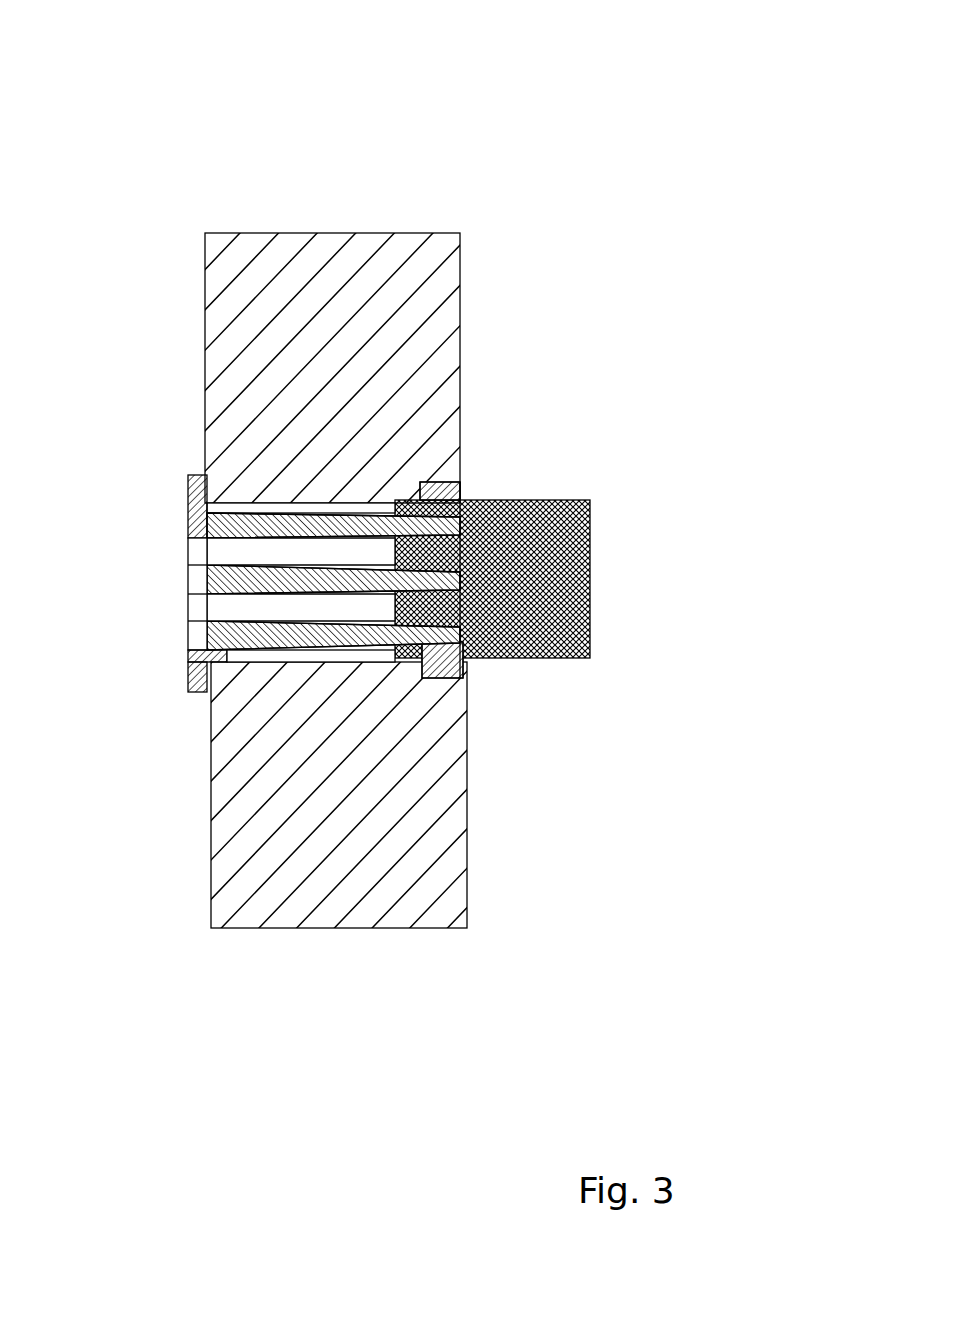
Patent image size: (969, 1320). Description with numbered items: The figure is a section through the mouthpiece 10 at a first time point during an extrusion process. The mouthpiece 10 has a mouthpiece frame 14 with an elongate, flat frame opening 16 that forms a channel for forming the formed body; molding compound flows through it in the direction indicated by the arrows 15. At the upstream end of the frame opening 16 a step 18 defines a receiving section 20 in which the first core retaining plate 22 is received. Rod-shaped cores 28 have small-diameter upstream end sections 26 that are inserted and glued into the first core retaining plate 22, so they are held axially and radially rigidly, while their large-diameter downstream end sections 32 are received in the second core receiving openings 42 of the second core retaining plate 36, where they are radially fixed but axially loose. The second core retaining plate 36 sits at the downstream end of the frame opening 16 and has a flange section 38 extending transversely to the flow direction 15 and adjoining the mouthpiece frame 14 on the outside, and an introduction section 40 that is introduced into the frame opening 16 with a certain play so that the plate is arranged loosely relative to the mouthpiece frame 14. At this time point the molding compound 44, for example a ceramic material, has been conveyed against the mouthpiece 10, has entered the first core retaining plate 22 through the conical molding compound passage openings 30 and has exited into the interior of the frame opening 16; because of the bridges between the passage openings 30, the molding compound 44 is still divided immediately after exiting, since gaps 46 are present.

The mouthpiece 10 is at (585, 122).
The mouthpiece frame 14 is at (453, 318).
The arrow 15 is at (127, 583).
The frame opening 16 is at (326, 504).
The step 18 is at (447, 493).
The receiving section 20 is at (445, 695).
The first core retaining plate 22 is at (463, 670).
The upstream end section 26 is at (467, 663).
The core 28 is at (292, 637).
The molding compound passage opening 30 is at (408, 518).
The downstream end section 32 is at (203, 525).
The second core retaining plate 36 is at (203, 693).
The flange section 38 is at (192, 677).
The introduction section 40 is at (210, 515).
The second core receiving opening 42 is at (190, 647).
The molding compound 44 is at (590, 643).
The gap 46 is at (412, 545).